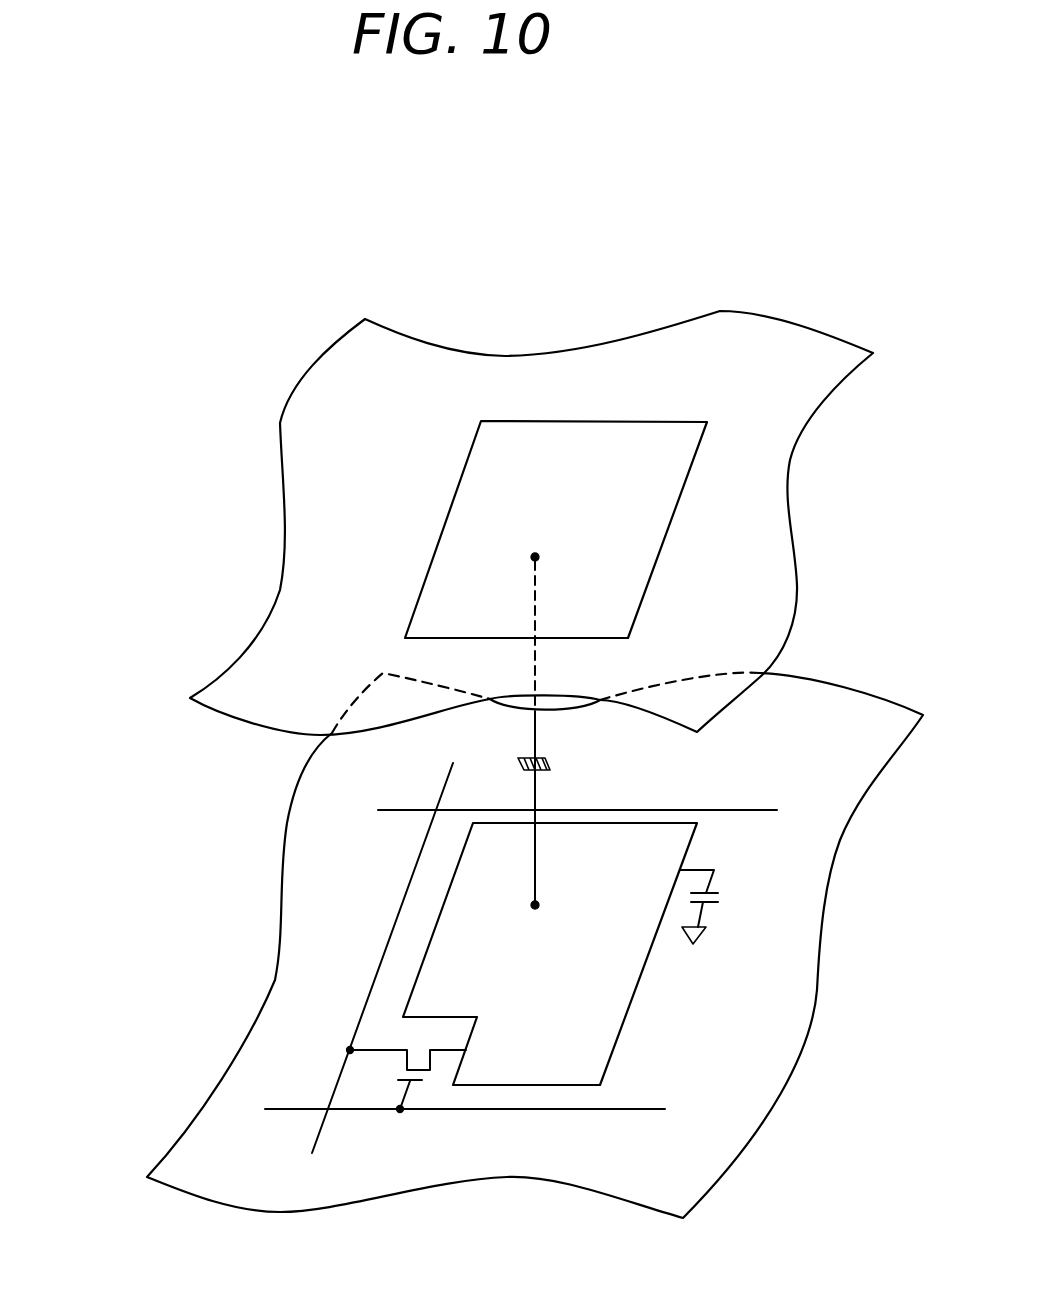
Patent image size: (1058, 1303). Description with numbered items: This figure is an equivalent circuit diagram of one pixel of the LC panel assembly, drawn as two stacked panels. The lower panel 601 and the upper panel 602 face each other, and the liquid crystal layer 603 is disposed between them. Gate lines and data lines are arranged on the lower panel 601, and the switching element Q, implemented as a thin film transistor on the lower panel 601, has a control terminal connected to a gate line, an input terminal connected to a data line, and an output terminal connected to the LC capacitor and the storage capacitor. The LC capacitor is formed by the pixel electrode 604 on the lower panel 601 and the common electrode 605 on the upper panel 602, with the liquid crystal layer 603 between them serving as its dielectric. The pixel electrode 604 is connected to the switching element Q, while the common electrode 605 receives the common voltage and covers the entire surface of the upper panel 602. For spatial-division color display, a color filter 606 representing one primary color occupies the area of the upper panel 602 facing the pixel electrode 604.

The lower panel 601 is at (549, 945).
The upper panel 602 is at (560, 523).
The liquid crystal layer 603 is at (187, 825).
The pixel electrode 604 is at (627, 1013).
The common electrode 605 is at (788, 492).
The color filter 606 is at (663, 547).